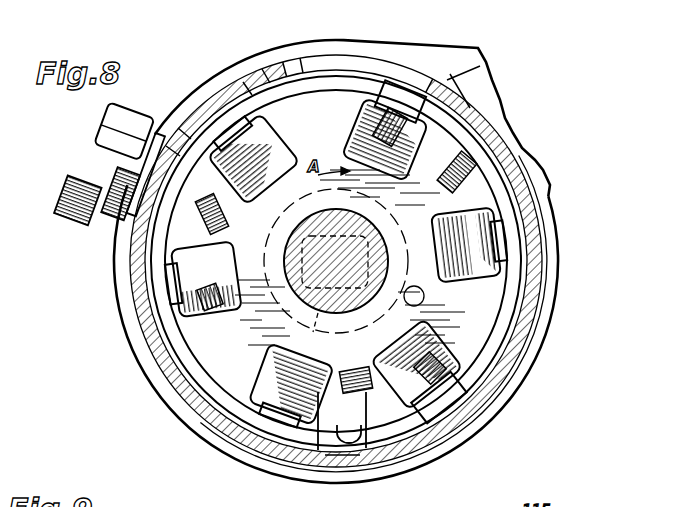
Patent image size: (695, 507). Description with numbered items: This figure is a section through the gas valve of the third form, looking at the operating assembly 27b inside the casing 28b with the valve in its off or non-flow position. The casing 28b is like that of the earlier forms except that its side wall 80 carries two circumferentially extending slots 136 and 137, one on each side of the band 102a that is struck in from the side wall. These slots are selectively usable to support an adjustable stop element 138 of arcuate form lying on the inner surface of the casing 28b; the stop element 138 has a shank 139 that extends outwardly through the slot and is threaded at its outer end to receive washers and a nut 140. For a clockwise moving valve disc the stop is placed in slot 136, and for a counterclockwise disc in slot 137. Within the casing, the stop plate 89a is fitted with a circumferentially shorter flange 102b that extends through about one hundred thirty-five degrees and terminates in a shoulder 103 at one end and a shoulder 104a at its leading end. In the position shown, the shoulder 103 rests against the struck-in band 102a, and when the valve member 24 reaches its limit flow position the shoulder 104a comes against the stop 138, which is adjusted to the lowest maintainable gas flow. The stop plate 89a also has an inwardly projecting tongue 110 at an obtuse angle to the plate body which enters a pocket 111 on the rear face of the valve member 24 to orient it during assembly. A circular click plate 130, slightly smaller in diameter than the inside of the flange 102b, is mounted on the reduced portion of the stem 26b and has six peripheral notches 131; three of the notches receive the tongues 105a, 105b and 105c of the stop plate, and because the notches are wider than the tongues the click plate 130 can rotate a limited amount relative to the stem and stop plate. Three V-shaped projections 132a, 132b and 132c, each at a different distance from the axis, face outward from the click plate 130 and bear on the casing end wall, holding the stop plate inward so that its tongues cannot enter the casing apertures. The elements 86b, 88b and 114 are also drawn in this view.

The valve member 24 is at (263, 422).
The valve stem 26b is at (315, 223).
The operating assembly 27b is at (473, 323).
The casing 28b is at (137, 322).
The side wall 80 is at (172, 400).
The hub flange 86b is at (380, 230).
The hub bore 88b is at (312, 322).
The stop plate 89a is at (273, 373).
The struck-in band 102a is at (250, 100).
The flange 102b is at (513, 223).
The shoulder 103 is at (305, 77).
The shoulder 104a is at (470, 365).
The tongue 105a is at (377, 125).
The tongue 105b is at (460, 407).
The tongue 105c is at (213, 307).
The tongue 110 is at (327, 440).
The pocket 111 is at (367, 443).
The housing wall 114 is at (190, 368).
The click plate 130 is at (510, 297).
The peripheral notches 131 is at (483, 273).
The projection 132a is at (213, 228).
The projection 132b is at (487, 167).
The projection 132c is at (357, 367).
The slot 136 is at (195, 115).
The slot 137 is at (483, 67).
The adjustable stop element 138 is at (150, 220).
The shank 139 is at (150, 177).
The nut 140 is at (108, 118).